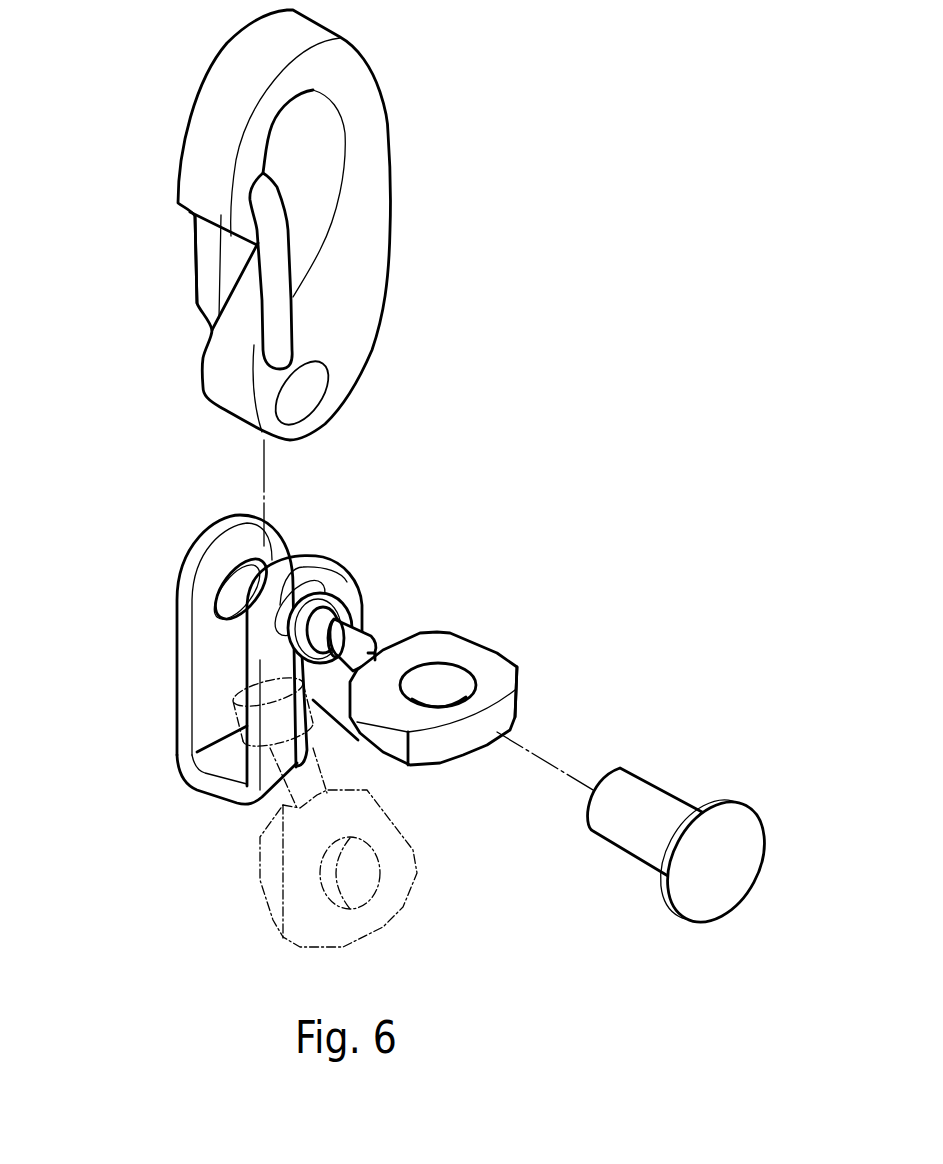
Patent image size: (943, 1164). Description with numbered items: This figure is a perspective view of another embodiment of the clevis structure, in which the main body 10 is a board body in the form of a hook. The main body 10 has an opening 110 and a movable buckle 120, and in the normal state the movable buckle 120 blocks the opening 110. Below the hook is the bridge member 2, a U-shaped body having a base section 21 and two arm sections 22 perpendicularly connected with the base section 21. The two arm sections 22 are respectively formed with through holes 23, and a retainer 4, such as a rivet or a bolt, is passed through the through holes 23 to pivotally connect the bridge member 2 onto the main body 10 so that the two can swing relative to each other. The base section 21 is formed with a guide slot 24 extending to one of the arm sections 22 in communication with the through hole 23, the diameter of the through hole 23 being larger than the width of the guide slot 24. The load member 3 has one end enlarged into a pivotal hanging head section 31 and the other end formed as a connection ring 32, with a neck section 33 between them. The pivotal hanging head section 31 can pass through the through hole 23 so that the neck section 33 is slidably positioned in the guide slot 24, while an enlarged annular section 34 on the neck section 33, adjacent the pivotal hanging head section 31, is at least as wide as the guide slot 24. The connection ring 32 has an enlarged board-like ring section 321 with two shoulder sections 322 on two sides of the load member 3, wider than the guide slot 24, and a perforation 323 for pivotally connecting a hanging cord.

The main body 10 is at (319, 225).
The opening 110 is at (235, 257).
The movable buckle 120 is at (200, 235).
The bridge member 2 is at (255, 731).
The base section 21 is at (207, 786).
The arm section 22 is at (180, 663).
The through hole 23 is at (236, 620).
The guide slot 24 is at (347, 727).
The load member 3 is at (426, 617).
The pivotal hanging head section 31 is at (338, 612).
The connection ring 32 is at (457, 658).
The board-like ring section 321 is at (532, 673).
The shoulder section 322 is at (410, 635).
The perforation 323 is at (450, 676).
The neck section 33 is at (368, 650).
The annular section 34 is at (343, 615).
The retainer 4 is at (647, 800).